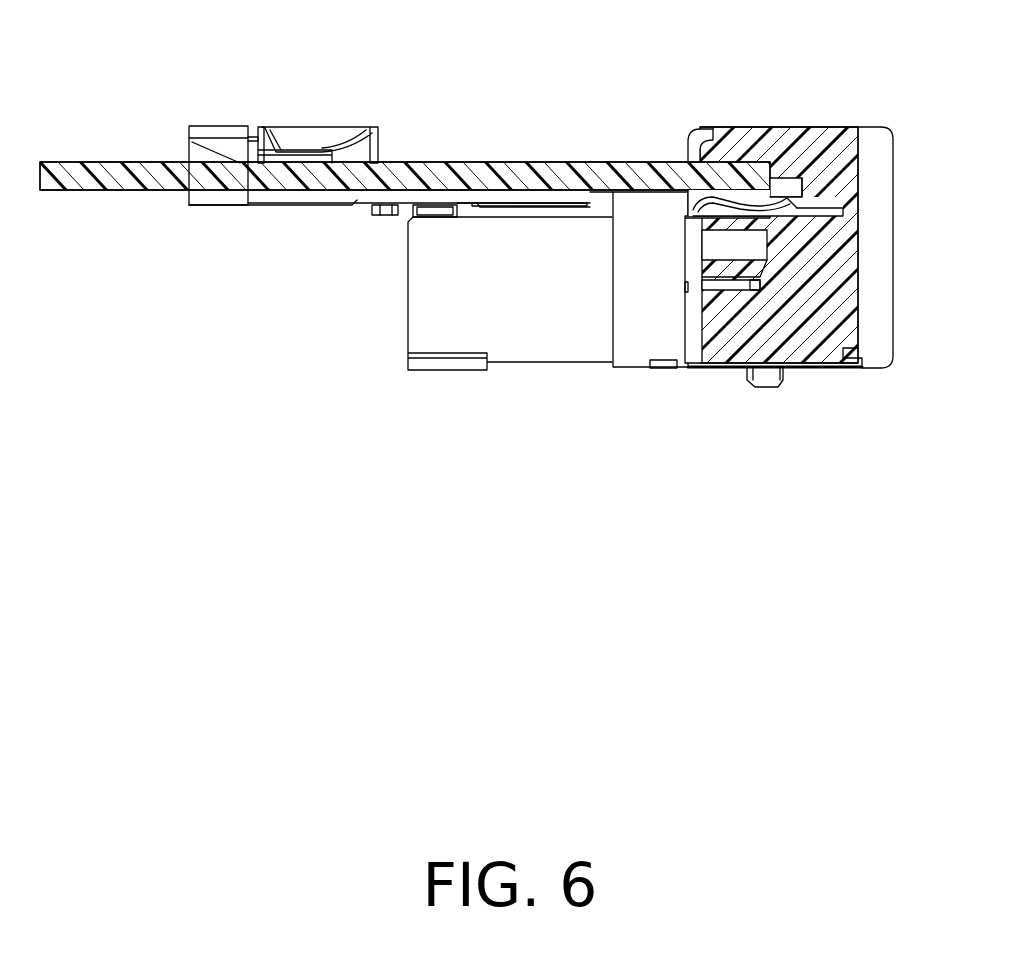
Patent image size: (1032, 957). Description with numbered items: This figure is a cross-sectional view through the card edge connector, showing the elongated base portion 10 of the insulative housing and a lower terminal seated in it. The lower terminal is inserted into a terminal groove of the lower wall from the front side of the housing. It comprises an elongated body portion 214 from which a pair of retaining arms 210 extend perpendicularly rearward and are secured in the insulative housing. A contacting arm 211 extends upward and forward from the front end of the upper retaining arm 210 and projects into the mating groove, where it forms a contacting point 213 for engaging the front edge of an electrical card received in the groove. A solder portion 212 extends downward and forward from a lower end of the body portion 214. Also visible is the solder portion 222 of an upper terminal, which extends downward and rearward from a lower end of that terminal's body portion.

The base portion 10 is at (802, 292).
The retaining arms 210 is at (730, 282).
The contacting arm 211 is at (752, 200).
The solder portion 212 is at (673, 367).
The contacting point 213 is at (700, 208).
The elongated body portion 214 is at (692, 245).
The solder portion 222 is at (862, 366).